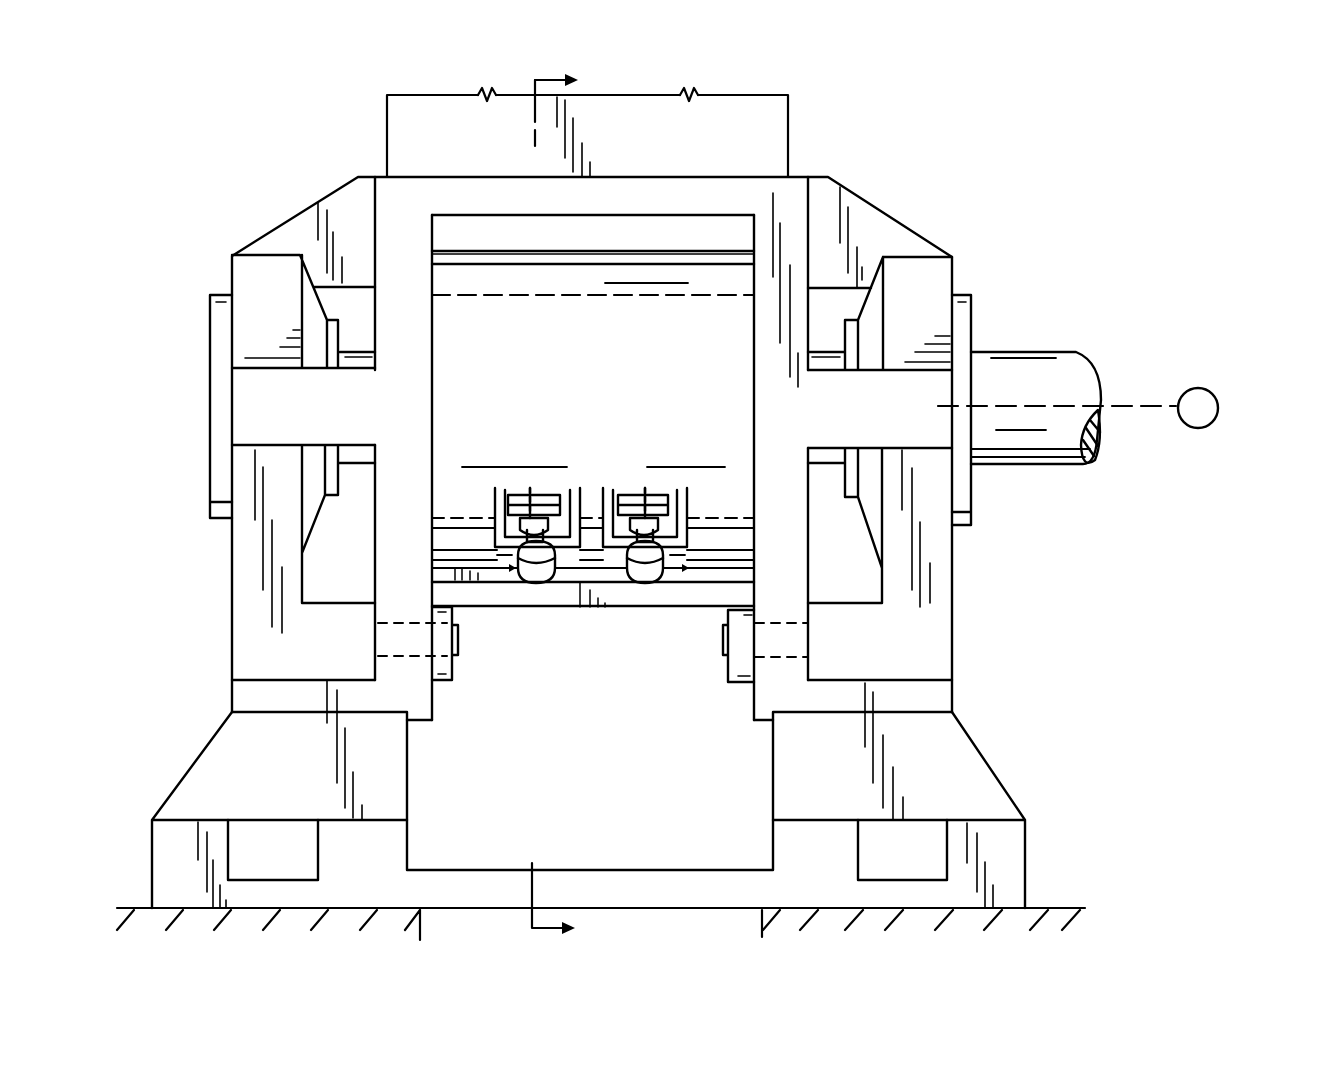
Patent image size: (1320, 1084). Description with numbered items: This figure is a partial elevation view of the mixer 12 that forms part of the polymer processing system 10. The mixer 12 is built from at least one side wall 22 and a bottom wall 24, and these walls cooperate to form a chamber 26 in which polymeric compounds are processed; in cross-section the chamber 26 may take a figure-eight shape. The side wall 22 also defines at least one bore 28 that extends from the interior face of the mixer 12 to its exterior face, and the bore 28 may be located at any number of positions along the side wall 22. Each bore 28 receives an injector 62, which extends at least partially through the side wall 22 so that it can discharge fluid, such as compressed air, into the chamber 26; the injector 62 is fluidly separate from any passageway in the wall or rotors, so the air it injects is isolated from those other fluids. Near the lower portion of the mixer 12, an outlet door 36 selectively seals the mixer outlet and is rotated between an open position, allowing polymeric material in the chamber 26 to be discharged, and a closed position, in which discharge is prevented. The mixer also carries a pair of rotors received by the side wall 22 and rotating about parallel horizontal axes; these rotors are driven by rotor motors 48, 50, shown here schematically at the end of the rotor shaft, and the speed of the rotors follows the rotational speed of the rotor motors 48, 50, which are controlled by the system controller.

The polymer processing system 10 is at (1066, 129).
The mixer 12 is at (293, 184).
The side wall 22 is at (748, 327).
The bottom wall 24 is at (937, 733).
The chamber 26 is at (620, 300).
The bore 28 is at (535, 482).
The outlet door 36 is at (703, 600).
The rotor motor 48 is at (1193, 388).
The rotor motor 50 is at (1114, 385).
The injector 62 is at (533, 590).